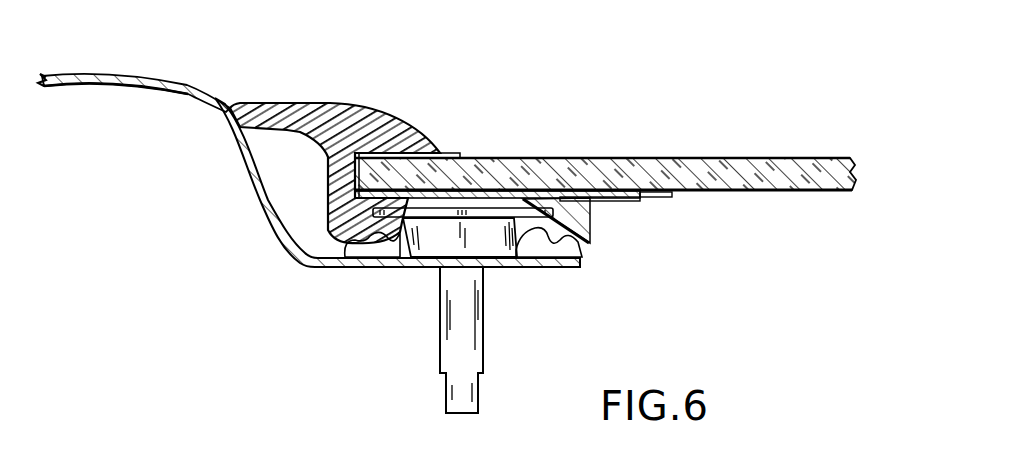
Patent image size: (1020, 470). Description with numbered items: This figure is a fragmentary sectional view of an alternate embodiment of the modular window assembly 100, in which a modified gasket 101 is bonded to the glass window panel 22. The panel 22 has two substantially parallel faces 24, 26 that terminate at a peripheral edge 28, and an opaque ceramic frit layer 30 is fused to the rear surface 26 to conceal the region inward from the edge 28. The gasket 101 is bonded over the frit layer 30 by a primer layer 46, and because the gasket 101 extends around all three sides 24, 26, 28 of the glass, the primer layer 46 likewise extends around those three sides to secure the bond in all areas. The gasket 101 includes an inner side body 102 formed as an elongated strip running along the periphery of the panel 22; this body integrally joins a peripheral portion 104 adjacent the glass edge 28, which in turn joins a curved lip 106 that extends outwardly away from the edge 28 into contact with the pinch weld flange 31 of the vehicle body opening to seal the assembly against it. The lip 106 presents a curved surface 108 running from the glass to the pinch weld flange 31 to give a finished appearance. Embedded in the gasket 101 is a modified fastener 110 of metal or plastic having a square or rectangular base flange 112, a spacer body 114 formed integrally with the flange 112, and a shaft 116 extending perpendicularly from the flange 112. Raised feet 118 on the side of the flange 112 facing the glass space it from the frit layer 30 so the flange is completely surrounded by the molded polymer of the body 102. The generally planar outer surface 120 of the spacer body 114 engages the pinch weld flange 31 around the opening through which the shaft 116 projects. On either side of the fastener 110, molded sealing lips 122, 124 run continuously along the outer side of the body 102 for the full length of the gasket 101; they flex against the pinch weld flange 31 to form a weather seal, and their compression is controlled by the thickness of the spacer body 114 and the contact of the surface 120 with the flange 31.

The window assembly 100 is at (667, 76).
The panel 22 is at (718, 154).
The surface 24 is at (613, 160).
The surface 26 is at (780, 192).
The peripheral edge 28 is at (330, 175).
The frit layer 30 is at (657, 199).
The pinch weld flange 31 is at (130, 88).
The primer layer 46 is at (453, 152).
The gasket 101 is at (370, 93).
The inner side body 102 is at (584, 240).
The peripheral portion 104 is at (328, 222).
The curved lip 106 is at (257, 108).
The curved surface 108 is at (313, 101).
The fastener 110 is at (427, 360).
The base flange 112 is at (367, 267).
The spacer body 114 is at (497, 240).
The shaft 116 is at (485, 367).
The raised feet 118 is at (405, 210).
The outer surface 120 is at (427, 266).
The sealing lip 122 is at (378, 243).
The sealing lip 124 is at (543, 262).